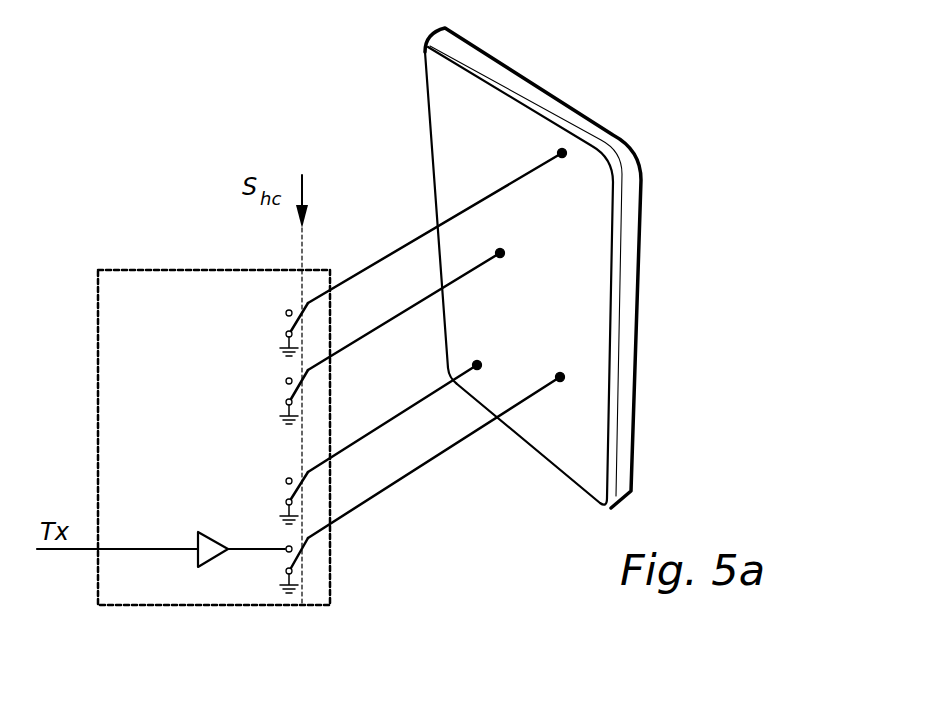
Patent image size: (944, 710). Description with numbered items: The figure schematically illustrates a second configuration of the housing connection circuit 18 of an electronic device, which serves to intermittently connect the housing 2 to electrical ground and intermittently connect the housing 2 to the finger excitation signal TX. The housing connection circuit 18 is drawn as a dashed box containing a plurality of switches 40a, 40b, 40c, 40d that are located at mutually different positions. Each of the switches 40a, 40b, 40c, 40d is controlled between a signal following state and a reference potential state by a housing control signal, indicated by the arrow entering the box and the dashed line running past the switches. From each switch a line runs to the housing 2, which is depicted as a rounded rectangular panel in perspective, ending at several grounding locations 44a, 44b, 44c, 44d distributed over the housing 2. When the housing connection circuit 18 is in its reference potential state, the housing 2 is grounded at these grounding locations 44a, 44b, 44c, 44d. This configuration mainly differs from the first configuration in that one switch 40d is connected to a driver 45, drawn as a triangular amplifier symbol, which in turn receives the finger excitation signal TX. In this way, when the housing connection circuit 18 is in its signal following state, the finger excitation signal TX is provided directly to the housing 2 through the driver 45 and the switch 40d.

The housing 2 is at (632, 213).
The housing connection circuit 18 is at (97, 380).
The switch 40a is at (266, 324).
The switch 40b is at (266, 394).
The switch 40c is at (267, 490).
The switch 40d is at (268, 540).
The grounding location 44a is at (563, 152).
The grounding location 44b is at (501, 252).
The grounding location 44c is at (478, 364).
The grounding location 44d is at (561, 376).
The driver 45 is at (200, 553).